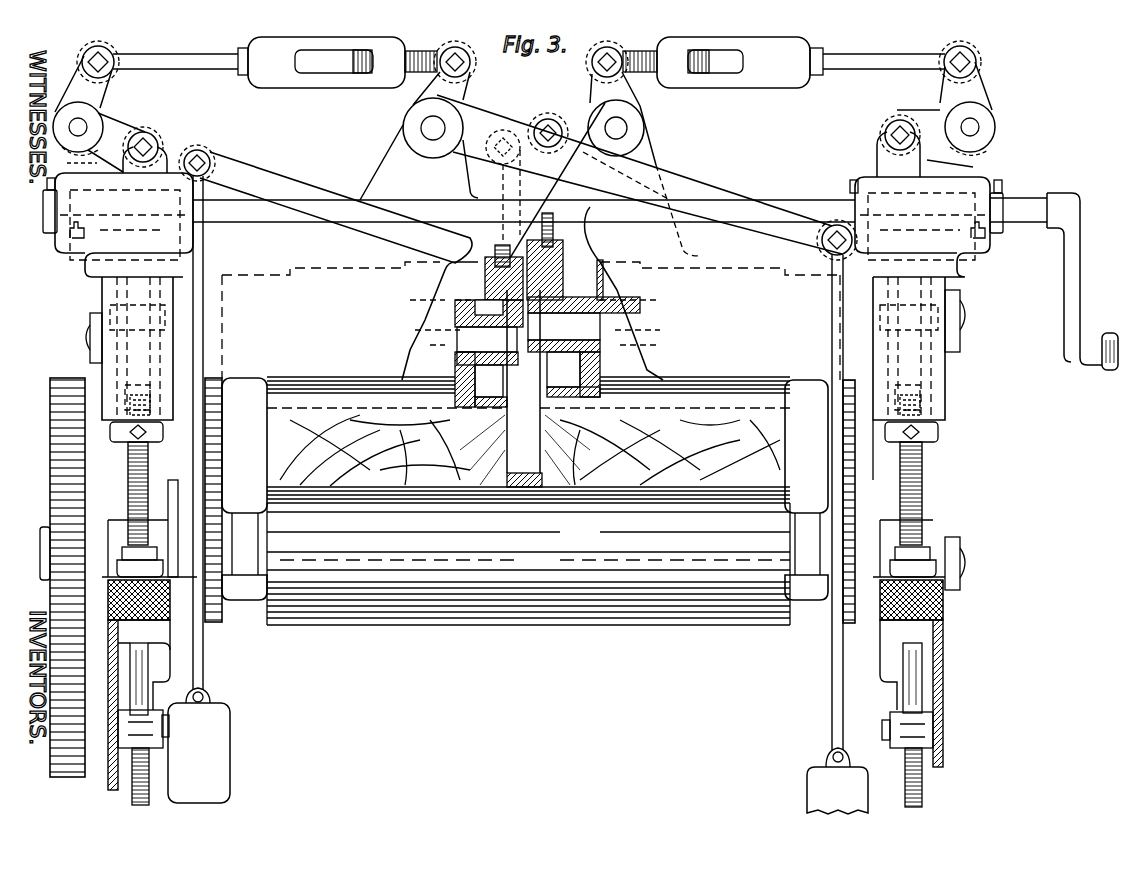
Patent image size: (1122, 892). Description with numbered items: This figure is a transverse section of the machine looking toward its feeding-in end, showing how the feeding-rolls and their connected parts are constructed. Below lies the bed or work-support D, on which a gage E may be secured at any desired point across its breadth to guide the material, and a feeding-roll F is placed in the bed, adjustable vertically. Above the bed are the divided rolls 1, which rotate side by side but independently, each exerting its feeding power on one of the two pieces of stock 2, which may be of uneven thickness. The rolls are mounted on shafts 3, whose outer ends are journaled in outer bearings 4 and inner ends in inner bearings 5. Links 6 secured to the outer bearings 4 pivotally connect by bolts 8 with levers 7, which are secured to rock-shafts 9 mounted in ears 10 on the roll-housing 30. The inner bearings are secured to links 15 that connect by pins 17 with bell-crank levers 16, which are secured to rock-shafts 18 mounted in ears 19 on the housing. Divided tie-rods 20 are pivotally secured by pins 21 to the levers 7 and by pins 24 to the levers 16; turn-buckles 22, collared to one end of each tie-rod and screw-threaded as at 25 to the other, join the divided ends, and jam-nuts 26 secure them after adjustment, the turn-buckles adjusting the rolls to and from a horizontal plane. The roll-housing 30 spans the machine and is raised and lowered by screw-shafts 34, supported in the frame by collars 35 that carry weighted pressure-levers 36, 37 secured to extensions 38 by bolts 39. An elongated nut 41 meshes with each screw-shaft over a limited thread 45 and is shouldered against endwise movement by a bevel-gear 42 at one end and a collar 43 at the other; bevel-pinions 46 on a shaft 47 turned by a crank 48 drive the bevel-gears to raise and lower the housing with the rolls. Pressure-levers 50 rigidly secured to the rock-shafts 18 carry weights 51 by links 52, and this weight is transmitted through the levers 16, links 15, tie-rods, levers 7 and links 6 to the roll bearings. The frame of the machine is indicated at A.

The roll 1 is at (532, 293).
The piece of stock 2 is at (305, 458).
The shaft 3 is at (85, 340).
The outer bearing 4 is at (90, 320).
The inner bearing 5 is at (572, 227).
The link 6 is at (207, 158).
The lever 7 is at (523, 84).
The bolt 8 is at (160, 143).
The rock-shaft 9 is at (105, 118).
The ear 10 is at (80, 163).
The link 15 is at (497, 225).
The lever 16 is at (415, 95).
The pin 17 is at (515, 125).
The rock-shaft 18 is at (420, 127).
The ear 19 is at (678, 155).
The tie-rod 20 is at (215, 70).
The pin 21 is at (114, 55).
The turn-buckle 22 is at (288, 82).
The pin 24 is at (472, 68).
The screw-thread 25 is at (358, 75).
The jam-nut 26 is at (415, 42).
The roll-housing 30 is at (793, 183).
The screw-shaft 34 is at (128, 485).
The collar 35 is at (160, 556).
The pressure-lever 36 is at (150, 712).
The pressure-lever 37 is at (132, 795).
The extension 38 is at (150, 662).
The bolt 39 is at (170, 722).
The elongated nut 41 is at (100, 290).
The bevel-gear 42 is at (990, 245).
The collar 43 is at (112, 435).
The thread 45 is at (152, 410).
The bevel-pinion 46 is at (70, 242).
The shaft 47 is at (60, 228).
The crank 48 is at (1064, 296).
The pressure-lever 50 is at (528, 179).
The weight 51 is at (518, 751).
The link 52 is at (205, 660).
The frame A is at (120, 685).
The bed D is at (262, 448).
The gage E is at (525, 472).
The feeding-roll F is at (528, 556).